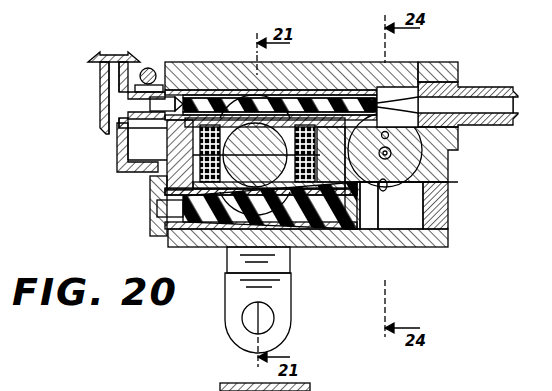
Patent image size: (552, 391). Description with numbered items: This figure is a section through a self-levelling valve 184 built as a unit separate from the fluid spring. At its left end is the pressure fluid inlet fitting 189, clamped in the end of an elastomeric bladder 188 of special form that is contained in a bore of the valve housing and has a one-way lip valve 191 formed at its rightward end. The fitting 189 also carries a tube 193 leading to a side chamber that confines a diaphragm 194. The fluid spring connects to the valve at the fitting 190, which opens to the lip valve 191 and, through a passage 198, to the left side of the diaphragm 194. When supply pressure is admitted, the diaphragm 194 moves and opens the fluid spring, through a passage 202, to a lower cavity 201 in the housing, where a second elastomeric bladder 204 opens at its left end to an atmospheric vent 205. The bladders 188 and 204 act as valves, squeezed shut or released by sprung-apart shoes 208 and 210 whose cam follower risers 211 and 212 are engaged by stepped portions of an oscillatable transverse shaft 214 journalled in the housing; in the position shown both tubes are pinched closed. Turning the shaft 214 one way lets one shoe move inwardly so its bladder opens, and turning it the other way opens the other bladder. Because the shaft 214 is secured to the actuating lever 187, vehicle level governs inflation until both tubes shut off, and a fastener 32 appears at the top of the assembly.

The mounting bolt 32 is at (110, 42).
The self-levelling valve 184 is at (412, 247).
The actuating lever 187 is at (293, 300).
The elastomeric bladder 188 is at (340, 92).
The pressure fluid inlet fitting 189 is at (100, 88).
The fitting 190 is at (488, 90).
The lip valve 191 is at (394, 106).
The tube 193 is at (122, 172).
The diaphragm 194 is at (391, 204).
The passage 198 is at (392, 118).
The lower cavity 201 is at (413, 228).
The passage 202 is at (410, 183).
The elastomeric bladder 204 is at (346, 247).
The atmospheric vent 205 is at (158, 234).
The shoe 208 is at (233, 96).
The shoe 210 is at (190, 247).
The cam follower riser 211 is at (286, 96).
The cam follower riser 212 is at (292, 250).
The transverse shaft 214 is at (200, 148).